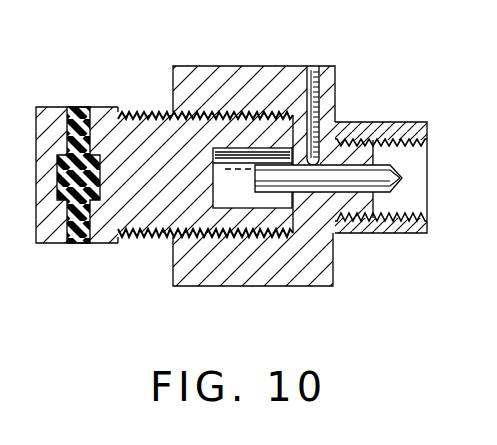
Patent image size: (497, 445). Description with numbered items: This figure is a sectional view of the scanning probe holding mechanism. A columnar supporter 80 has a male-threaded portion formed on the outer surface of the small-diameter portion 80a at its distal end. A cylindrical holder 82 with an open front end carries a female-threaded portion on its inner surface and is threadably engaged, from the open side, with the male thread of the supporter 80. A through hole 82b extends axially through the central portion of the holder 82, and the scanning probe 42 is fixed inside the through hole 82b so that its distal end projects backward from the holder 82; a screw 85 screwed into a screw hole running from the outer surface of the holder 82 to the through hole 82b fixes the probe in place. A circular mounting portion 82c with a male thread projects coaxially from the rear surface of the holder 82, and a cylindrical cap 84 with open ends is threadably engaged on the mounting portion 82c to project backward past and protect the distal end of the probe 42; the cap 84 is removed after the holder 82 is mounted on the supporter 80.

The columnar supporter 80 is at (143, 107).
The small-diameter portion 80a is at (137, 238).
The cylindrical holder 82 is at (292, 287).
The through hole 82b is at (357, 148).
The mounting portion 82c is at (357, 212).
The cap 84 is at (412, 122).
The screw 85 is at (309, 68).
The scanning probe 42 is at (402, 180).